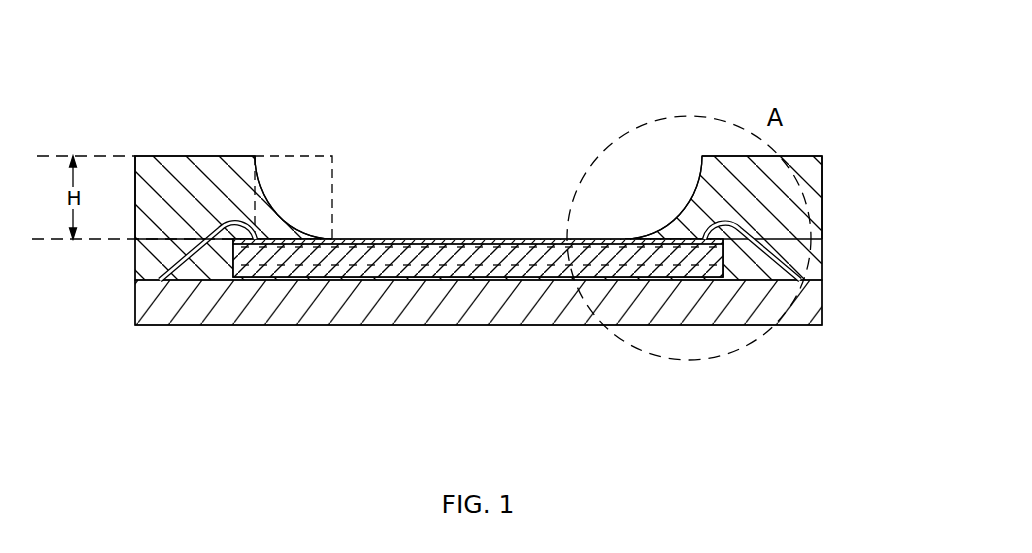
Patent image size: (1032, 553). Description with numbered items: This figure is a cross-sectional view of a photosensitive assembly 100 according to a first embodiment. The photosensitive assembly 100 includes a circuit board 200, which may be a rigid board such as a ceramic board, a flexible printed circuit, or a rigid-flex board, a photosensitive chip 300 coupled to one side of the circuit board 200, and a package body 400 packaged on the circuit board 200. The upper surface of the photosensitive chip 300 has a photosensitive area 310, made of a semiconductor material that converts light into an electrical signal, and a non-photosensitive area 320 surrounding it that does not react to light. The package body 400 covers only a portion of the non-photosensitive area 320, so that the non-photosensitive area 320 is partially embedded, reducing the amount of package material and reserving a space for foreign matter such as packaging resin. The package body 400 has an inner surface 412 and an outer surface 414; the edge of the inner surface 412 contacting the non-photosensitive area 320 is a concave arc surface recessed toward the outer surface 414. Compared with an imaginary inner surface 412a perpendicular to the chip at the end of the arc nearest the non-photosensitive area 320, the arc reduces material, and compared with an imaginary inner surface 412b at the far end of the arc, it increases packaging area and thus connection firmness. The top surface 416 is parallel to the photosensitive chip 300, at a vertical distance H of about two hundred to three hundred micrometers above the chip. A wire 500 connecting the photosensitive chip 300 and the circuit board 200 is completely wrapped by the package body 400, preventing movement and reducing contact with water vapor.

The photosensitive assembly 100 is at (135, 33).
The circuit board 200 is at (135, 300).
The photosensitive chip 300 is at (350, 153).
The photosensitive area 310 is at (435, 238).
The non-photosensitive area 320 is at (345, 238).
The package body 400 is at (135, 250).
The inner surface 412 is at (677, 210).
The imaginary inner surface 412a is at (317, 183).
The imaginary inner surface 412b is at (248, 183).
The outer surface 414 is at (822, 188).
The top surface 416 is at (145, 156).
The wire 500 is at (777, 252).